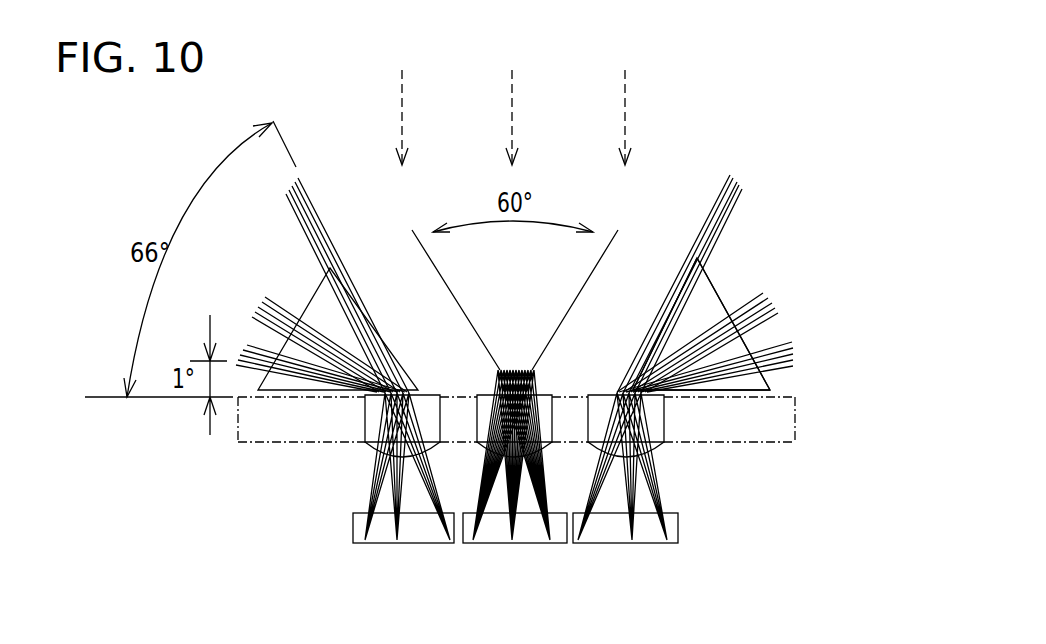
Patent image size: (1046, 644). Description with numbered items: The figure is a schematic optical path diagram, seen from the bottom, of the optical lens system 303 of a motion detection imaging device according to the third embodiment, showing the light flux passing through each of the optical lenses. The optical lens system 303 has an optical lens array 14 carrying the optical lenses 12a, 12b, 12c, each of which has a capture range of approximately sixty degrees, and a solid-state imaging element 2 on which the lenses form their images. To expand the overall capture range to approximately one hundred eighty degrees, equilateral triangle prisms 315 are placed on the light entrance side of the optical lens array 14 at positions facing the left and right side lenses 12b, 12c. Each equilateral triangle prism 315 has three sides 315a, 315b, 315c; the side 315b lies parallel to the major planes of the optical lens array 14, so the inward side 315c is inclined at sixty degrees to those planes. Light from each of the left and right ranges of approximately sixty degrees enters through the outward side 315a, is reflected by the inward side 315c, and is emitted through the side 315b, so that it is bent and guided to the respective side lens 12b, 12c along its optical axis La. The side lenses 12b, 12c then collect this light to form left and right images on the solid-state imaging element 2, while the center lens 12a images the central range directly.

The optical lens system 303 is at (735, 137).
The equilateral triangle prism 315 is at (325, 305).
The outward side 315a is at (745, 340).
The side parallel to the lens array 315b is at (738, 392).
The inward side 315c is at (663, 310).
The optical lens 12a is at (490, 403).
The left side lens 12b is at (368, 452).
The right side lens 12c is at (665, 442).
The optical lens array 14 is at (238, 437).
The solid-state imaging element 2 is at (668, 527).
The optical axis La is at (511, 101).